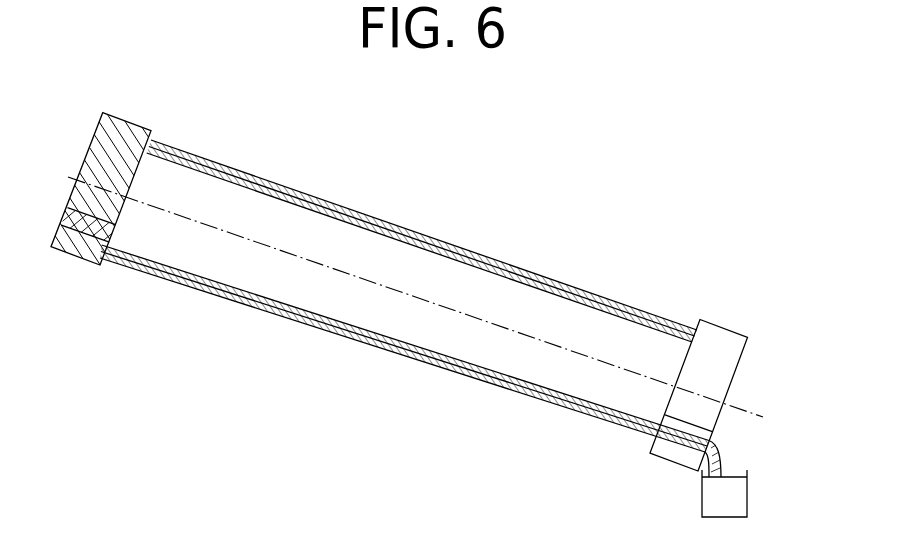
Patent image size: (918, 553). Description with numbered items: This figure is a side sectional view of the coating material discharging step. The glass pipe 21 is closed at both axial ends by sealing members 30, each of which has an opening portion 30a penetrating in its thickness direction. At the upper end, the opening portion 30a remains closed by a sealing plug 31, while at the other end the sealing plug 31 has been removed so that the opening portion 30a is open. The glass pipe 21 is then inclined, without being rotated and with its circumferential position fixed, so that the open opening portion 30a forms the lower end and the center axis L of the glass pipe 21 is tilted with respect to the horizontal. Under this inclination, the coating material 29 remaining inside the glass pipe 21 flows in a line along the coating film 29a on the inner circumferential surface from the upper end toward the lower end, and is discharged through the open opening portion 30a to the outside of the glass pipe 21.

The glass pipe 21 is at (404, 296).
The coating material 29 is at (632, 437).
The coating film 29a is at (578, 288).
The sealing member 30 is at (140, 128).
The opening portion 30a is at (75, 233).
The sealing plug 31 is at (68, 217).
The center axis L is at (178, 215).